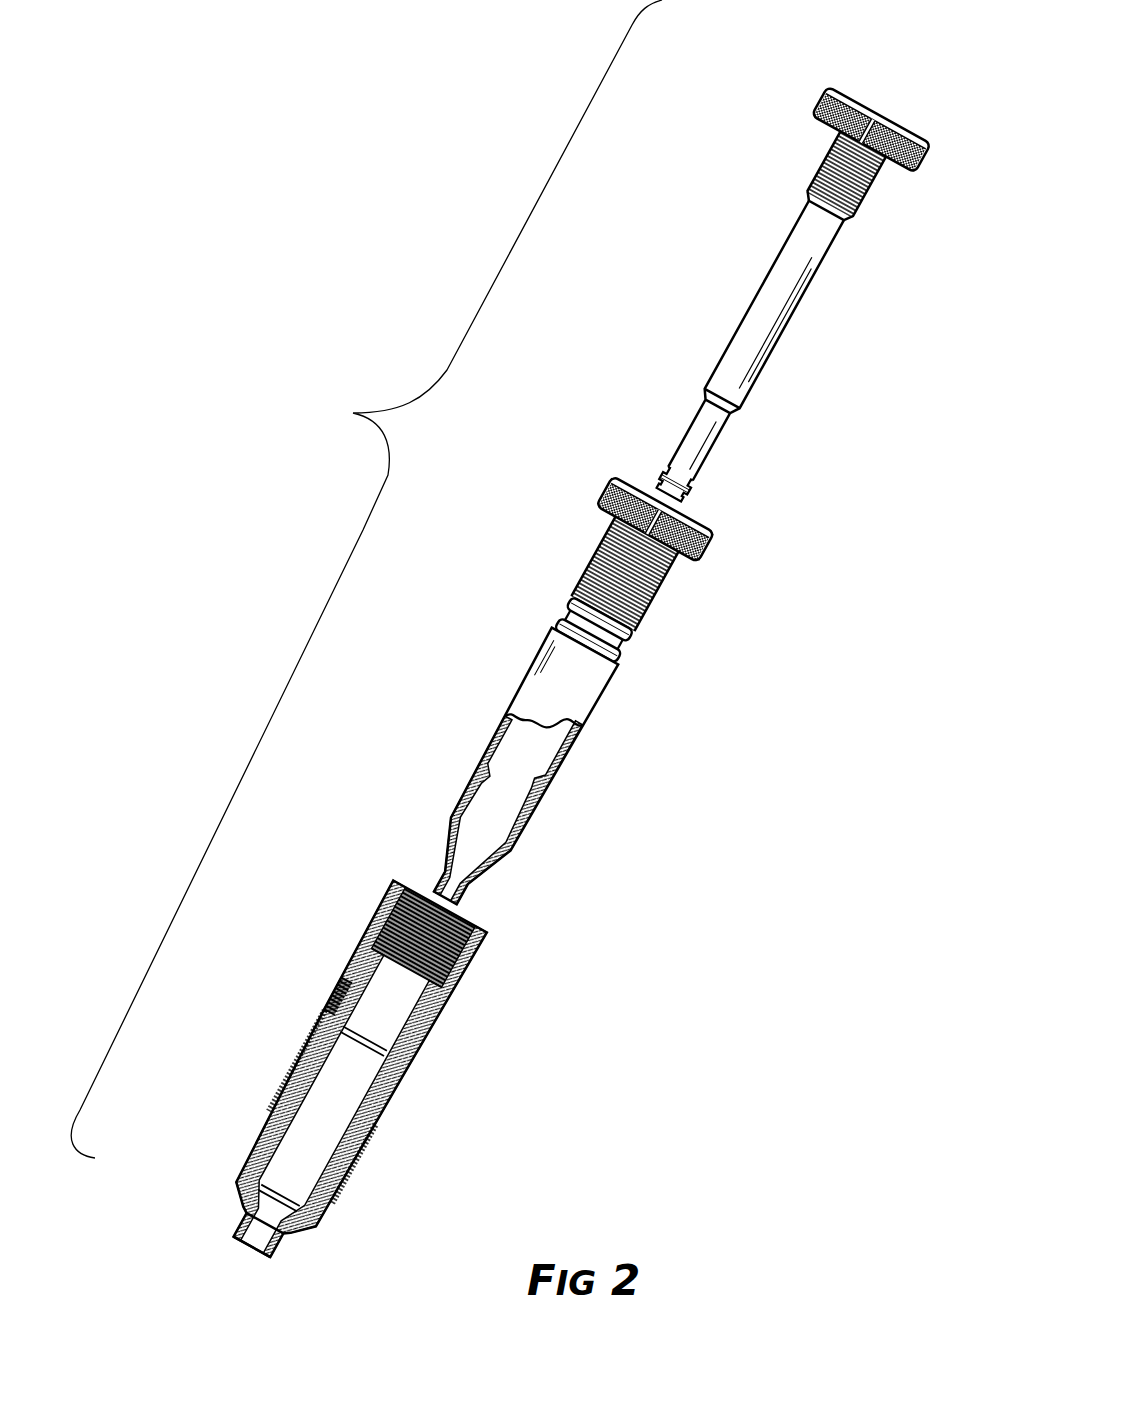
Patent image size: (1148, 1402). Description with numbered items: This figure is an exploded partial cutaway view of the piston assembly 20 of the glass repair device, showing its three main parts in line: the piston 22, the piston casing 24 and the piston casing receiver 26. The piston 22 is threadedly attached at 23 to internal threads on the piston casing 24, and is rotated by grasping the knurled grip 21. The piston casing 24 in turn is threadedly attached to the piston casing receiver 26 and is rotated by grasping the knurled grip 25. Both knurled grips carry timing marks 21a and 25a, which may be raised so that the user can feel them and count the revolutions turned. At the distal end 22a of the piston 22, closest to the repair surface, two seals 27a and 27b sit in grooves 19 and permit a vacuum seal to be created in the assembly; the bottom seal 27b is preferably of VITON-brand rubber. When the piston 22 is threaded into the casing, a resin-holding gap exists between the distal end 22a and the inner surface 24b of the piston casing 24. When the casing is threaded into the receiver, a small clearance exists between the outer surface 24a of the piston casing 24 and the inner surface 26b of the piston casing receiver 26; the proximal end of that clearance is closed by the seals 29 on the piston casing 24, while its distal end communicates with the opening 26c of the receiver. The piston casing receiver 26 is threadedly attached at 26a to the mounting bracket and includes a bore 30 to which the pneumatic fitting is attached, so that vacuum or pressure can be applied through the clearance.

The grooves 19 is at (667, 462).
The piston assembly 20 is at (366, 579).
The knurled grip 21 is at (925, 162).
The timing mark 21a is at (878, 108).
The piston 22 is at (767, 283).
The distal end 22a is at (690, 500).
The threaded attachment 23 is at (865, 197).
The piston casing 24 is at (534, 660).
The outer surface 24a is at (560, 760).
The inner surface 24b is at (531, 812).
The knurled grip 25 is at (705, 548).
The timing mark 25a is at (652, 490).
The piston casing receiver 26 is at (456, 1046).
The threaded attachment 26a is at (300, 1053).
The inner surface 26b is at (350, 1158).
The opening 26c is at (255, 1255).
The seal 27a is at (712, 476).
The bottom seal 27b is at (692, 494).
The seals 29 is at (634, 657).
The bore 30 is at (336, 988).